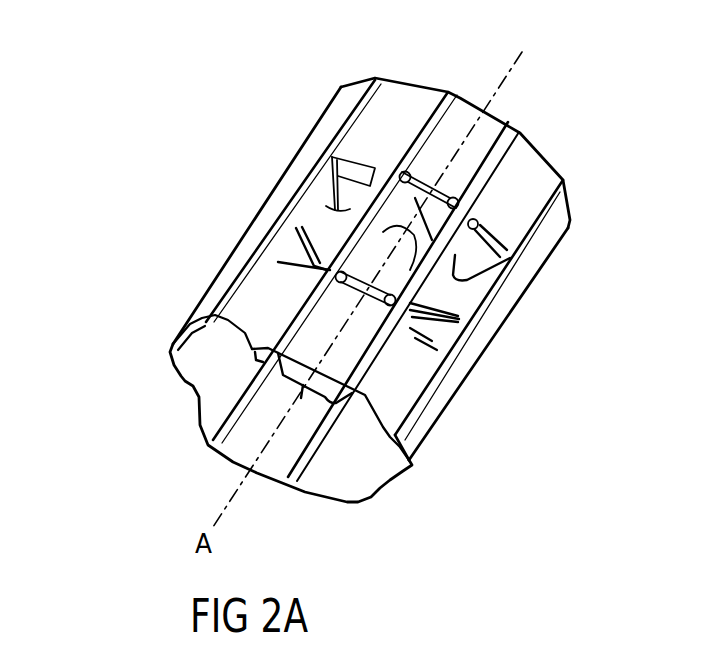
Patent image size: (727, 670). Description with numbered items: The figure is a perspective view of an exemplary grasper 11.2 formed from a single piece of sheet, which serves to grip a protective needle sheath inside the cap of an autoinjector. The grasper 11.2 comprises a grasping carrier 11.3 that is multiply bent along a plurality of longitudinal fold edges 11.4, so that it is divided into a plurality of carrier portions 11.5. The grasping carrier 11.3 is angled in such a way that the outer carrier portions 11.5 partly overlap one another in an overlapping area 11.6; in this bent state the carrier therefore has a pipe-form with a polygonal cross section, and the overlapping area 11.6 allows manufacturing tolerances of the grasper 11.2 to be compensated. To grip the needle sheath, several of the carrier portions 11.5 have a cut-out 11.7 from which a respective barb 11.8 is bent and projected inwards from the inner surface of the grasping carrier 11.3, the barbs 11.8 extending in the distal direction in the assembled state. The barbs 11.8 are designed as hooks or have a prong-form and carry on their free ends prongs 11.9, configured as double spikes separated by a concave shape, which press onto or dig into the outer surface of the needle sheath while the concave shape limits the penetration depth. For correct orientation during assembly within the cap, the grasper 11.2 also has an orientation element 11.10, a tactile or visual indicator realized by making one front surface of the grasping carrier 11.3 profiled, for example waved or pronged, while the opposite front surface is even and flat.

The grasper 11.2 is at (558, 122).
The grasping carrier 11.3 is at (537, 182).
The longitudinal fold edges 11.4 is at (440, 133).
The carrier portions 11.5 is at (447, 130).
The overlapping area 11.6 is at (165, 350).
The cut-out 11.7 is at (377, 247).
The barb 11.8 is at (484, 275).
The prongs 11.9 is at (455, 333).
The orientation element 11.10 is at (185, 425).